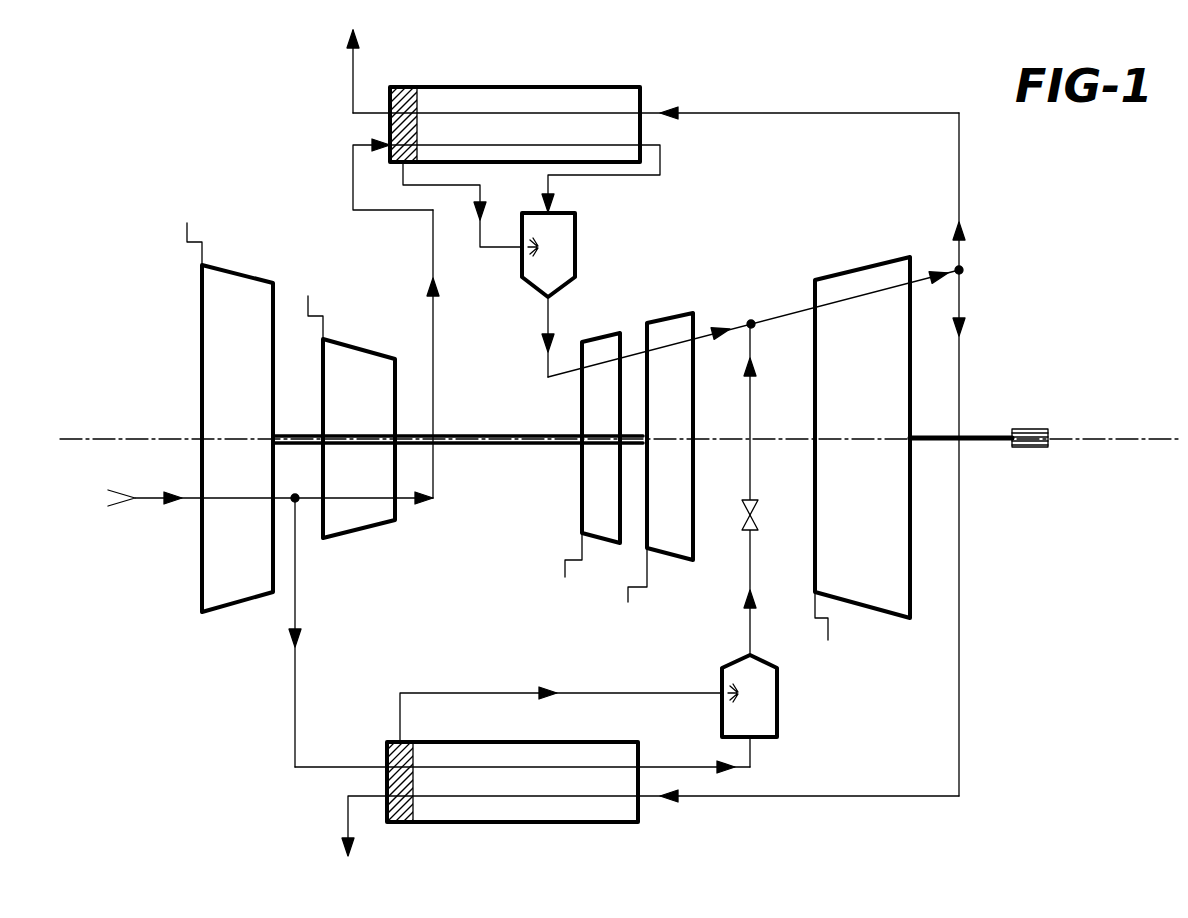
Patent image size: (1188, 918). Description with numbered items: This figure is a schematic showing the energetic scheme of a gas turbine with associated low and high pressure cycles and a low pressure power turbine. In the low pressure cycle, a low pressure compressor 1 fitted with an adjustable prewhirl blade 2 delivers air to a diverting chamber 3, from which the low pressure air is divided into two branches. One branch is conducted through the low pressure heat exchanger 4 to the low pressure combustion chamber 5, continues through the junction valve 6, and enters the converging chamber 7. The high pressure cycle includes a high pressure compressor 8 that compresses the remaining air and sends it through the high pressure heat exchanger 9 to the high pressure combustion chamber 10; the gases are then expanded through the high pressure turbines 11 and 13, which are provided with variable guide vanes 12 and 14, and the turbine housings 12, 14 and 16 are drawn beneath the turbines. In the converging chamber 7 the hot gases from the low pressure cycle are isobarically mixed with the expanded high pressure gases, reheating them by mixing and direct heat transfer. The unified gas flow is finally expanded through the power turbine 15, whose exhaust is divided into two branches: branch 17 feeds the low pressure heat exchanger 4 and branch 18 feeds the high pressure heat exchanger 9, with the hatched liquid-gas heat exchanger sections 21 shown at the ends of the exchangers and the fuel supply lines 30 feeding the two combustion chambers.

The low pressure compressor 1 is at (200, 593).
The adjustable prewhirl blade 2 is at (187, 250).
The diverting chamber 3 is at (303, 492).
The low pressure heat exchanger 4 is at (527, 812).
The low pressure combustion chamber 5 is at (768, 717).
The junction valve 6 is at (755, 514).
The converging chamber 7 is at (756, 318).
The high pressure compressor 8 is at (360, 524).
The high pressure heat exchanger 9 is at (546, 88).
The high pressure combustion chamber 10 is at (563, 263).
The high pressure turbine 11 is at (604, 336).
The variable guide vanes 12 is at (567, 577).
The high pressure turbine 13 is at (680, 318).
The variable guide vanes 14 is at (648, 590).
The power turbine 15 is at (858, 284).
The power turbine housing 16 is at (830, 628).
The exhaust gas branch 17 is at (961, 394).
The exhaust gas branch 18 is at (961, 198).
The liquid-gas heat exchanger 21 is at (406, 88).
The fuel supply line 30 is at (480, 247).